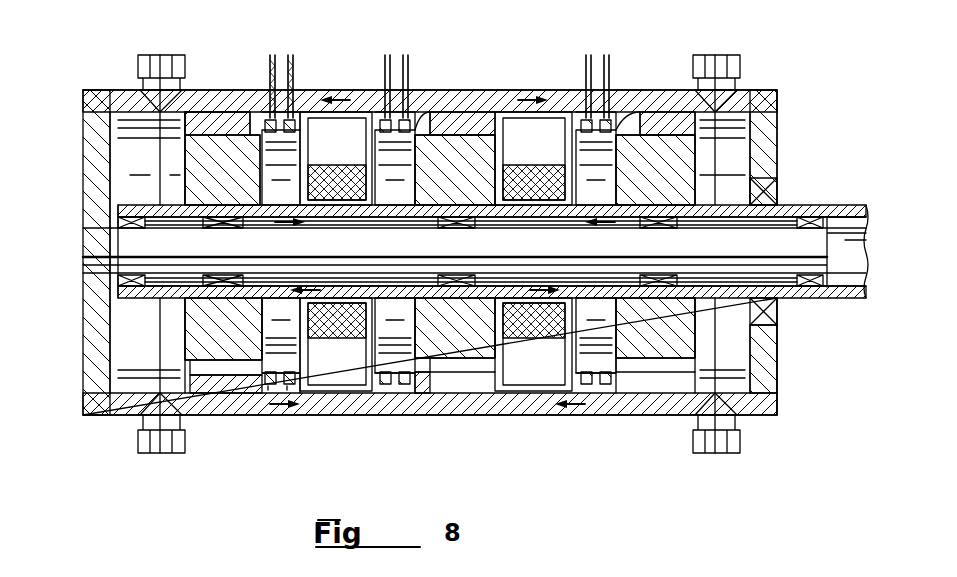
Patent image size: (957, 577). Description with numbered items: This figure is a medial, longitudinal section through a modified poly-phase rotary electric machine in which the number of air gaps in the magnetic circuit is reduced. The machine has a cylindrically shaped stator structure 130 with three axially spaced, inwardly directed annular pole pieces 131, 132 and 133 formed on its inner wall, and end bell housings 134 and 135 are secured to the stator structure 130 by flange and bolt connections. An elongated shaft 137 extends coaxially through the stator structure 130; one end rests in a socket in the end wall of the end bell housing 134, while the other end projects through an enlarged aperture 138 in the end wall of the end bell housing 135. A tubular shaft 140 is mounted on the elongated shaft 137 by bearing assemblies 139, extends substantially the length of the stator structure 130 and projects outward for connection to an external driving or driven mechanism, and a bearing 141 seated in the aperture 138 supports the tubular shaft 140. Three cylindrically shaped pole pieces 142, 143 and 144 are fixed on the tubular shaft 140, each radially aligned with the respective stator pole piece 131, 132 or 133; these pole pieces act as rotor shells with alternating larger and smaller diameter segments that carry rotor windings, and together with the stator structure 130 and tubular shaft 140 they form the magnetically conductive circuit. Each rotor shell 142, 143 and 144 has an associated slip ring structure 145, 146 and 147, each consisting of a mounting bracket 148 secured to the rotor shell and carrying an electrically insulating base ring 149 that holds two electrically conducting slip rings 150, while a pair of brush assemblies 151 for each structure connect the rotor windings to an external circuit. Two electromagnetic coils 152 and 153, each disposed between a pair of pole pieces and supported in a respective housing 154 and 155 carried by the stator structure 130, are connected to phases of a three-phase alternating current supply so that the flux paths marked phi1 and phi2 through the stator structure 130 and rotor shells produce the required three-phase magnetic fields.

The stator structure 130 is at (410, 410).
The annular pole piece 131 is at (187, 395).
The annular pole piece 132 is at (420, 372).
The annular pole piece 133 is at (620, 375).
The end bell housing 134 is at (83, 172).
The end bell housing 135 is at (772, 127).
The elongated shaft 137 is at (95, 262).
The enlarged aperture 138 is at (772, 310).
The bearing assemblies 139 is at (210, 228).
The tubular shaft 140 is at (852, 303).
The bearing 141 is at (774, 193).
The pole piece 142 is at (187, 348).
The pole piece 143 is at (490, 360).
The pole piece 144 is at (700, 336).
The slip ring structure 145 is at (262, 122).
The slip ring structure 146 is at (418, 130).
The slip ring structure 147 is at (620, 130).
The mounting bracket 148 is at (270, 210).
The electrically insulating base ring 149 is at (268, 386).
The slip rings 150 is at (286, 386).
The brush assemblies 151 is at (292, 65).
The electromagnetic coil 152 is at (350, 182).
The electromagnetic coil 153 is at (565, 182).
The housing 154 is at (350, 110).
The housing 155 is at (548, 110).
The flux path 1 phi1 is at (340, 398).
The flux path 2 phi2 is at (568, 398).